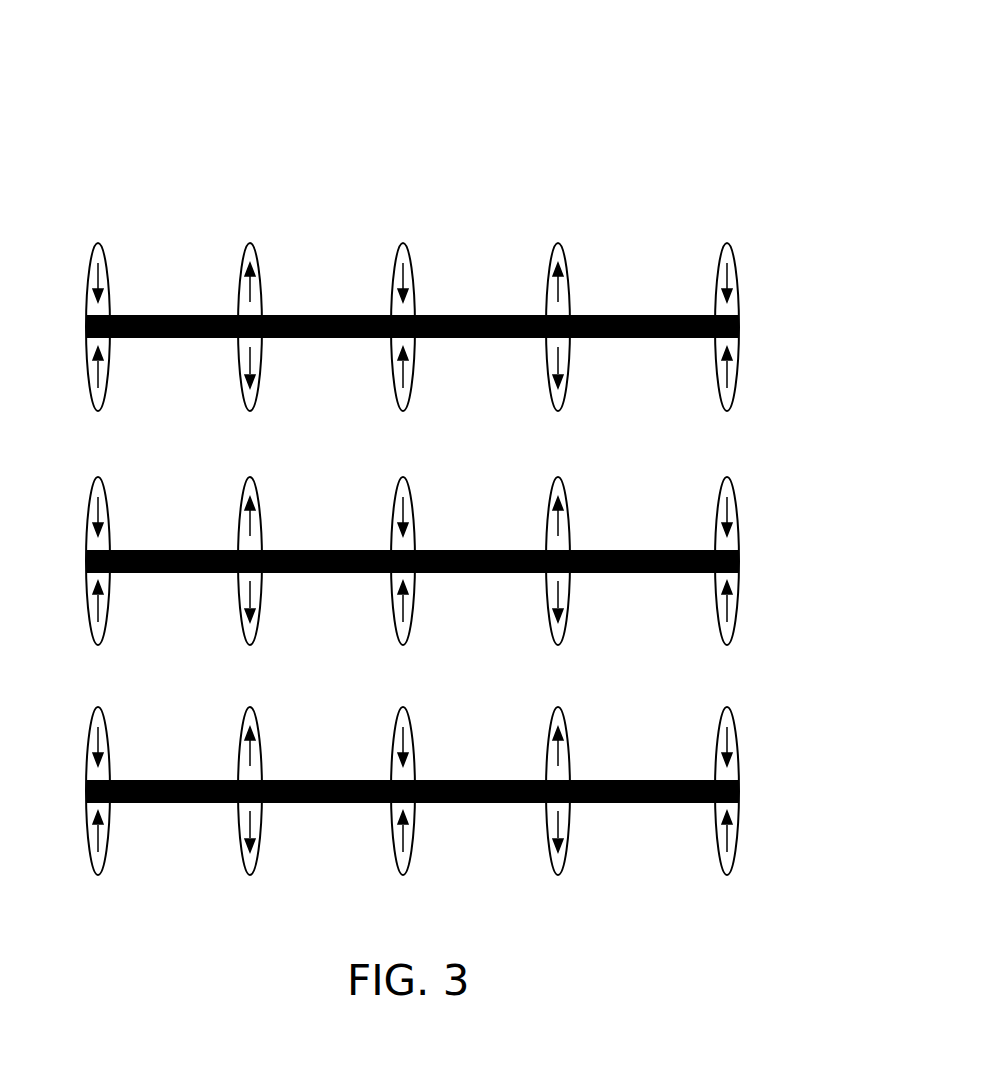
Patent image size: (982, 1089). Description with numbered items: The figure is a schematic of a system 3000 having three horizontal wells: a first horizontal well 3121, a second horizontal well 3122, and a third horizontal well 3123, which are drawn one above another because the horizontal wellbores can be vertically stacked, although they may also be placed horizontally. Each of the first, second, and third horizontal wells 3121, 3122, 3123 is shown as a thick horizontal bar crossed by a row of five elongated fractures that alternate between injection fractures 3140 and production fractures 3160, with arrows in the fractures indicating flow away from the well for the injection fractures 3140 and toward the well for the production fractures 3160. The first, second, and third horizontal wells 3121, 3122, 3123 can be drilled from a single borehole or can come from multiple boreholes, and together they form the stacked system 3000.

The system 3000 is at (740, 92).
The first horizontal well 3121 is at (176, 314).
The second horizontal well 3122 is at (172, 549).
The third horizontal well 3123 is at (168, 778).
The injection fractures 3140 is at (557, 243).
The production fractures 3160 is at (400, 402).